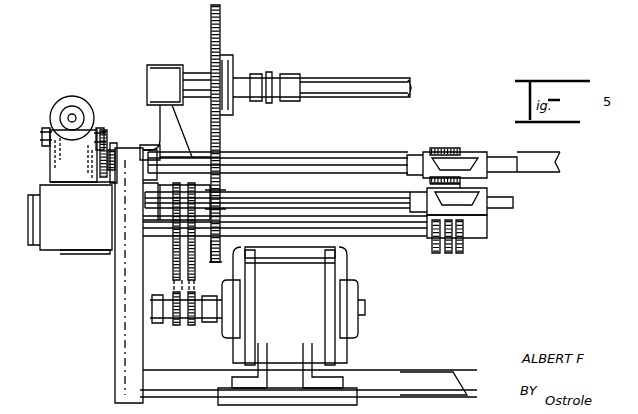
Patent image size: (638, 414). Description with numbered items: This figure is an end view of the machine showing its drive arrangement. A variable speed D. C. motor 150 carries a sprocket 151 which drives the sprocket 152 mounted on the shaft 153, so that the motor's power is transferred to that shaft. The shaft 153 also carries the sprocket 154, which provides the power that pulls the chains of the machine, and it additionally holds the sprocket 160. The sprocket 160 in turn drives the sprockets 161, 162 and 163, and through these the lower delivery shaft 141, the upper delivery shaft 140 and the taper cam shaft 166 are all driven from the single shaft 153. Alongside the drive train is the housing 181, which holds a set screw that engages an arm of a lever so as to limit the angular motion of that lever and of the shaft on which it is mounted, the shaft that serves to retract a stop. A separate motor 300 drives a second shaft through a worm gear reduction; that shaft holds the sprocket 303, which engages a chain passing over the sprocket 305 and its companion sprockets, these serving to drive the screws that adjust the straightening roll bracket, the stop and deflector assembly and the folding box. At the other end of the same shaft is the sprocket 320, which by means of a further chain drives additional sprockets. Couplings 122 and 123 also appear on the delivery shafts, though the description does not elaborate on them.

The upper coupling 122 is at (452, 148).
The lower coupling 123 is at (462, 238).
The upper delivery shaft 140 is at (347, 152).
The lower delivery shaft 141 is at (325, 201).
The variable speed D. C. motor 150 is at (363, 294).
The sprocket 151 is at (178, 328).
The sprocket 152 is at (177, 244).
The shaft 153 is at (350, 238).
The sprocket 154 is at (435, 253).
The sprocket 160 is at (221, 250).
The sprocket 161 is at (219, 193).
The sprocket 162 is at (215, 150).
The sprocket 163 is at (220, 26).
The taper cam shaft 166 is at (350, 76).
The housing 181 is at (60, 252).
The motor 300 is at (80, 96).
The sprocket 303 is at (102, 125).
The sprocket 305 is at (108, 148).
The sprocket 320 is at (42, 130).